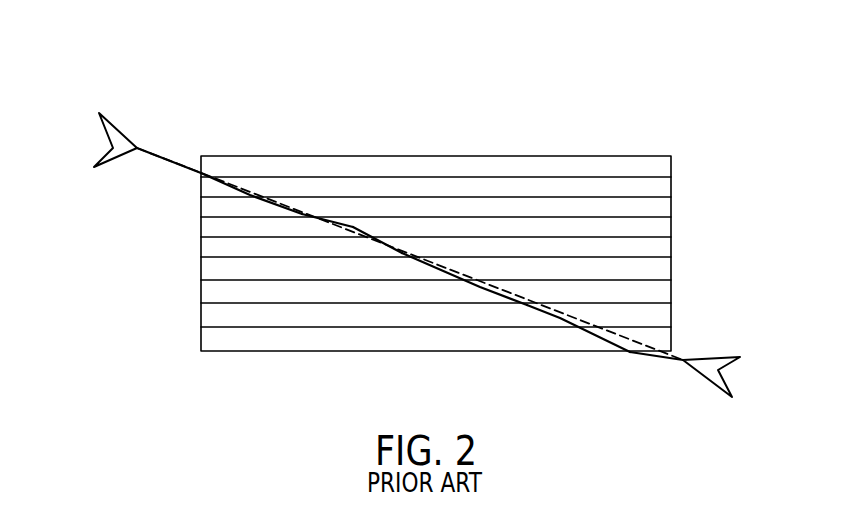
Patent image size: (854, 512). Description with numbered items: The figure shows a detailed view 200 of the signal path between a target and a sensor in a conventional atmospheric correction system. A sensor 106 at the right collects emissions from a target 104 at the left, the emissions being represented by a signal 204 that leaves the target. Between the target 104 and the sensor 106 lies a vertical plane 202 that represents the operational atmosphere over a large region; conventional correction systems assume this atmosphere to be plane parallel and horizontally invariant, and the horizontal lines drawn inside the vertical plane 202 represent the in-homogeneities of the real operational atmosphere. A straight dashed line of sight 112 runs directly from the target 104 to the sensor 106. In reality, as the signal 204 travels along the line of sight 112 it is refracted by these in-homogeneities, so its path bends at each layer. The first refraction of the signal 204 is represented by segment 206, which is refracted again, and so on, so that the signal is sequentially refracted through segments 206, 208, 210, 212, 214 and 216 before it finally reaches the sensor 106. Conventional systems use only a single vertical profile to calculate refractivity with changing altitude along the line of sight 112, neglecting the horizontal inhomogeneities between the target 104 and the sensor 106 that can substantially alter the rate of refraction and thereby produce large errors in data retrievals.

The target 104 is at (108, 131).
The sensor 106 is at (727, 367).
The line of sight 112 is at (500, 298).
The prior art ray propagation diagram 200 is at (682, 80).
The vertical plane 202 is at (428, 156).
The signal 204 is at (170, 162).
The segment 206 is at (250, 196).
The segment 208 is at (323, 220).
The segment 210 is at (402, 252).
The segment 212 is at (482, 287).
The segment 214 is at (560, 318).
The segment 216 is at (655, 362).